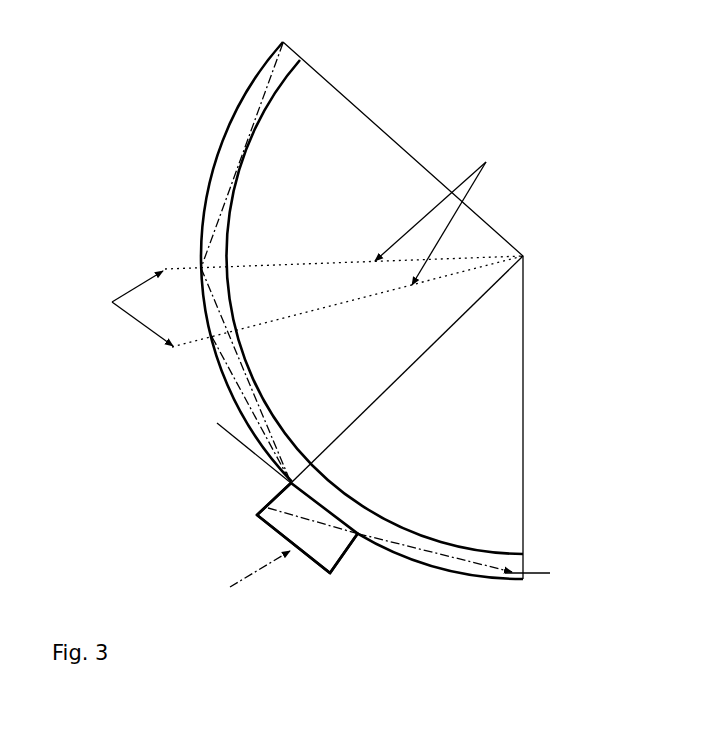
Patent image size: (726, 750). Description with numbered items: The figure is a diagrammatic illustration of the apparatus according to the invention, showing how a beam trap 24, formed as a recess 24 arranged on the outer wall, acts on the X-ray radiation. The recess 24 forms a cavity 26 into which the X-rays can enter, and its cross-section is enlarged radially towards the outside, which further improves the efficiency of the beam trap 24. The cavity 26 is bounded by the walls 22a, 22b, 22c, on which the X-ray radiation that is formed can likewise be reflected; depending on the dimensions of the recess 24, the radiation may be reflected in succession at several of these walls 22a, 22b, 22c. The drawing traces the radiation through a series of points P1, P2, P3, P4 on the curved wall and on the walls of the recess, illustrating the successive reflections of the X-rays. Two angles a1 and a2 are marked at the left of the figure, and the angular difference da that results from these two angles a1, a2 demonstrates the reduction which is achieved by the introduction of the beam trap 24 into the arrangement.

The wall 22a is at (263, 505).
The wall 22b is at (277, 537).
The wall 22c is at (343, 557).
The recess/beam trap 24 is at (245, 579).
The cavity 26 is at (318, 547).
The point P1 is at (359, 540).
The point P2 is at (291, 483).
The point P3 is at (212, 338).
The point P4 is at (201, 268).
The angle a1 is at (142, 327).
The angle a2 is at (313, 279).
The angular difference da is at (347, 301).